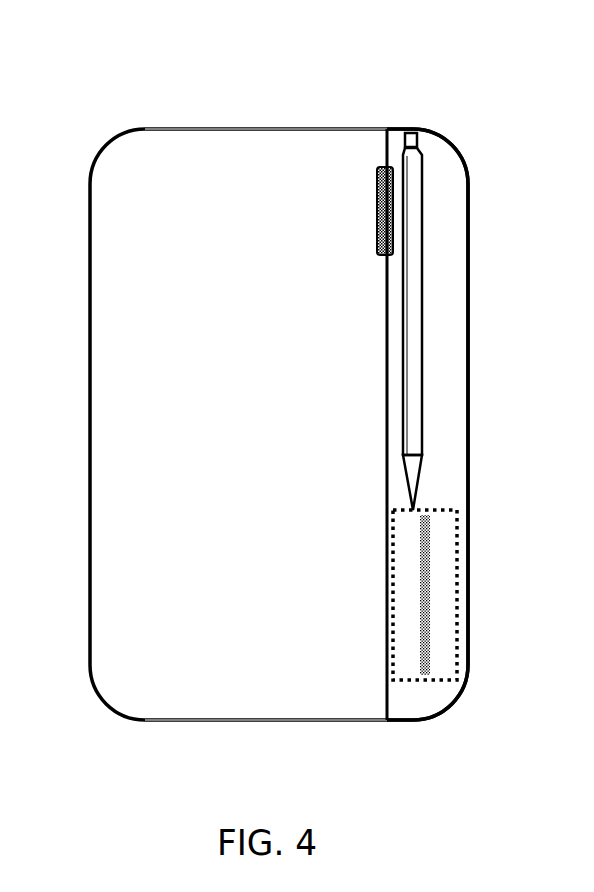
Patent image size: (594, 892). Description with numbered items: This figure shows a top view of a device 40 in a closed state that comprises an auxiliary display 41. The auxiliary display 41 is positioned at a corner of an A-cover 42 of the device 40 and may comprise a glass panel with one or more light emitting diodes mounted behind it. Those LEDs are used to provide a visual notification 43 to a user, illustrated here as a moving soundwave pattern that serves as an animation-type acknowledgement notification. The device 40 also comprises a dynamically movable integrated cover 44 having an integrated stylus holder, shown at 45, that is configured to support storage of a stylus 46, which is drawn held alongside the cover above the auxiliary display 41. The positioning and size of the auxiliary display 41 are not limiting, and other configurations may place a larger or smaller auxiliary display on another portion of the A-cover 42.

The device 40 is at (103, 78).
The auxiliary display 41 is at (458, 557).
The A-cover 42 is at (450, 425).
The visual notification 43 is at (428, 613).
The dynamically movable integrated cover 44 is at (305, 148).
The stylus clip 45 is at (404, 150).
The stylus 46 is at (415, 253).